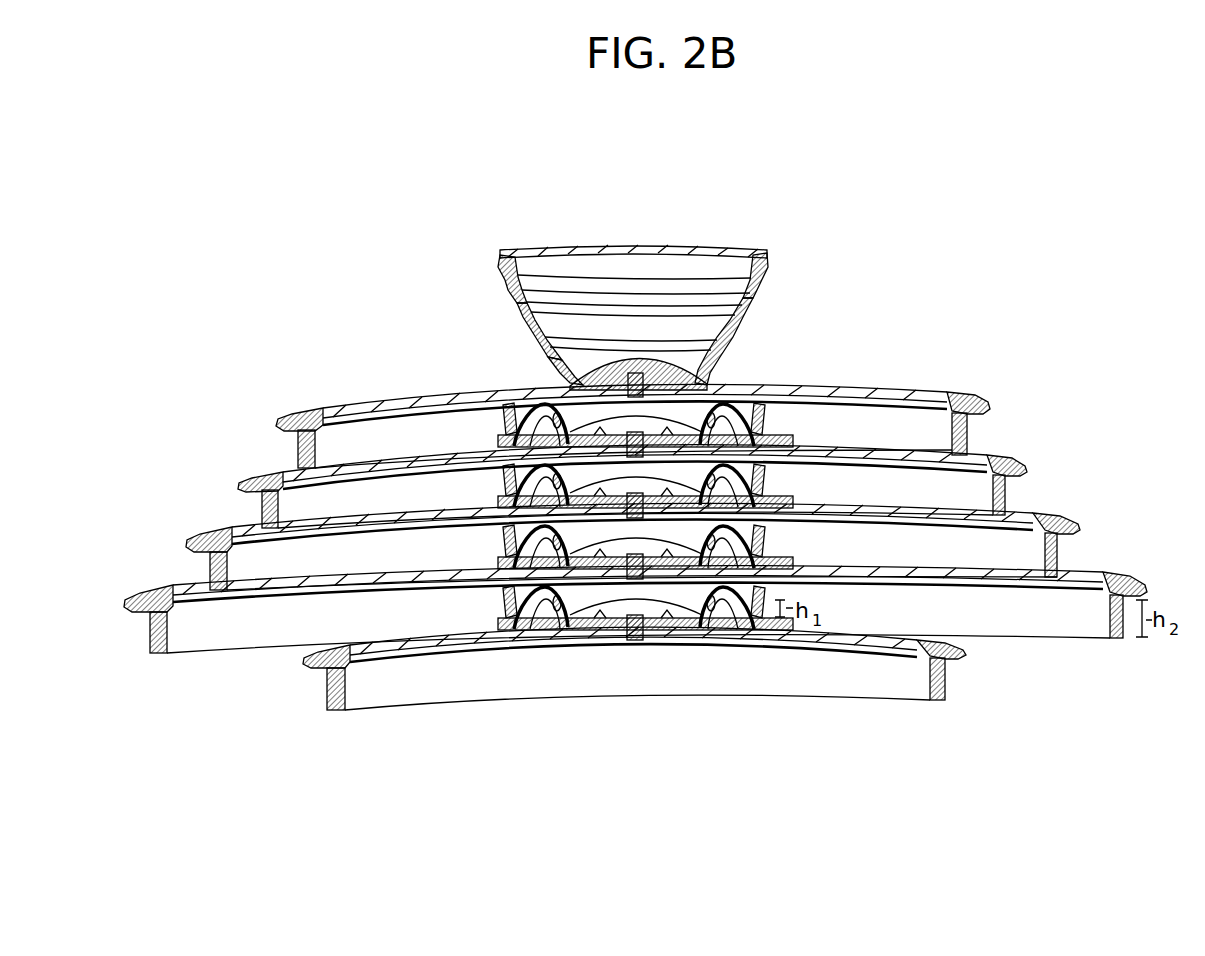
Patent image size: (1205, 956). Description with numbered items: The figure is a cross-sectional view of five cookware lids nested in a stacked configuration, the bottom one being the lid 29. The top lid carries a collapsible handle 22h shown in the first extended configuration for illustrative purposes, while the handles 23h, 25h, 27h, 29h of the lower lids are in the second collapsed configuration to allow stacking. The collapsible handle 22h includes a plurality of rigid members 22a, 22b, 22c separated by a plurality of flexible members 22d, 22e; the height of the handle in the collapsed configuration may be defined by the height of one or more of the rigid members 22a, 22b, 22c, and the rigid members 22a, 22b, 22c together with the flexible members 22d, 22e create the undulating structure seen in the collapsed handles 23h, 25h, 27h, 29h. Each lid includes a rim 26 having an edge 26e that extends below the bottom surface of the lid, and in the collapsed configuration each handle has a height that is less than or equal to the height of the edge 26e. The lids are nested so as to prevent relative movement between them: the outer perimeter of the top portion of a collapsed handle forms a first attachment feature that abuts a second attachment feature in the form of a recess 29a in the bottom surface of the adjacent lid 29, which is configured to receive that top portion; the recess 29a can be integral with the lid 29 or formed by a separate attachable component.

The collapsible handle 22h is at (548, 248).
The rigid member 22a is at (498, 272).
The rigid member 22b is at (522, 326).
The rigid member 22c is at (558, 368).
The flexible member 22d is at (765, 284).
The flexible member 22e is at (733, 345).
The handle 23h is at (506, 428).
The handle 25h is at (510, 490).
The handle 27h is at (508, 549).
The handle 29h is at (510, 610).
The rim 26 is at (659, 422).
The edge 26e is at (970, 437).
The cookware lid 29 is at (661, 682).
The recess 29a is at (774, 660).